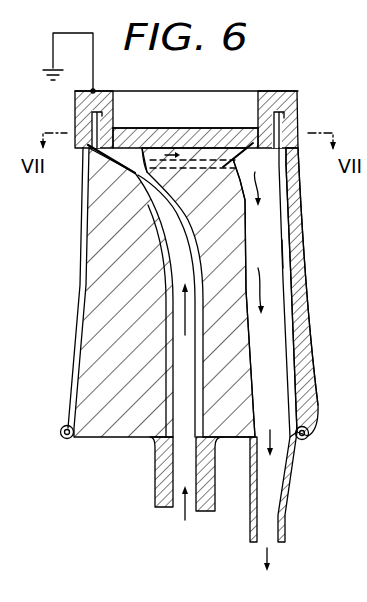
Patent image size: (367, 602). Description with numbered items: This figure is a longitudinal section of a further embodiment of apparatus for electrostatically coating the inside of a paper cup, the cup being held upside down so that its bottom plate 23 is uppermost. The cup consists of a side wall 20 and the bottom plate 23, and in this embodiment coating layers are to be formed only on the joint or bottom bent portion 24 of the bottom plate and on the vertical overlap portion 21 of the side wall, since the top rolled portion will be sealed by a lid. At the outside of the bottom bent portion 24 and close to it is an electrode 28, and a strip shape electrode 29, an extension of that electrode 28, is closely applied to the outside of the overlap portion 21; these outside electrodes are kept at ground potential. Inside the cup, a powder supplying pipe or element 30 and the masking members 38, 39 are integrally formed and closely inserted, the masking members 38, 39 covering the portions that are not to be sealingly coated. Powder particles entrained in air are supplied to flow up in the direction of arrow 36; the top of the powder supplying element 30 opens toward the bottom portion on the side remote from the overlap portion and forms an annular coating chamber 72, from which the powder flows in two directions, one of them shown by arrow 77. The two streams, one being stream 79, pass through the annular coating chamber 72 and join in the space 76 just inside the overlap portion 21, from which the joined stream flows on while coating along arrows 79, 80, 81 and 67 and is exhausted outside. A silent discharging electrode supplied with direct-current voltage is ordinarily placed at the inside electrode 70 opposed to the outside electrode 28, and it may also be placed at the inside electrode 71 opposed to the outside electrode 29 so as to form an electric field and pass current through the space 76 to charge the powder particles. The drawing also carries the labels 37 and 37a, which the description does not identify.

The side wall 20 is at (87, 216).
The overlap portion 21 is at (301, 172).
The bottom plate 23 is at (219, 128).
The bottom bent portion 24 is at (296, 130).
The electrode 28 is at (75, 107).
The strip shape electrode 29 is at (301, 223).
The powder supplying pipe 30 is at (166, 272).
The arrow 36 is at (185, 507).
The seat plate 37 is at (125, 128).
The seal 37a is at (294, 252).
The masking member 38 is at (186, 128).
The masking member 39 is at (92, 249).
The arrow 67 is at (267, 548).
The inside electrode 70 is at (135, 177).
The inside electrode 71 is at (245, 344).
The annular coating chamber 72 is at (100, 155).
The space 76 is at (290, 203).
The arrow 77 is at (163, 128).
The stream 79 is at (258, 201).
The arrow 80 is at (290, 252).
The arrow 81 is at (270, 430).